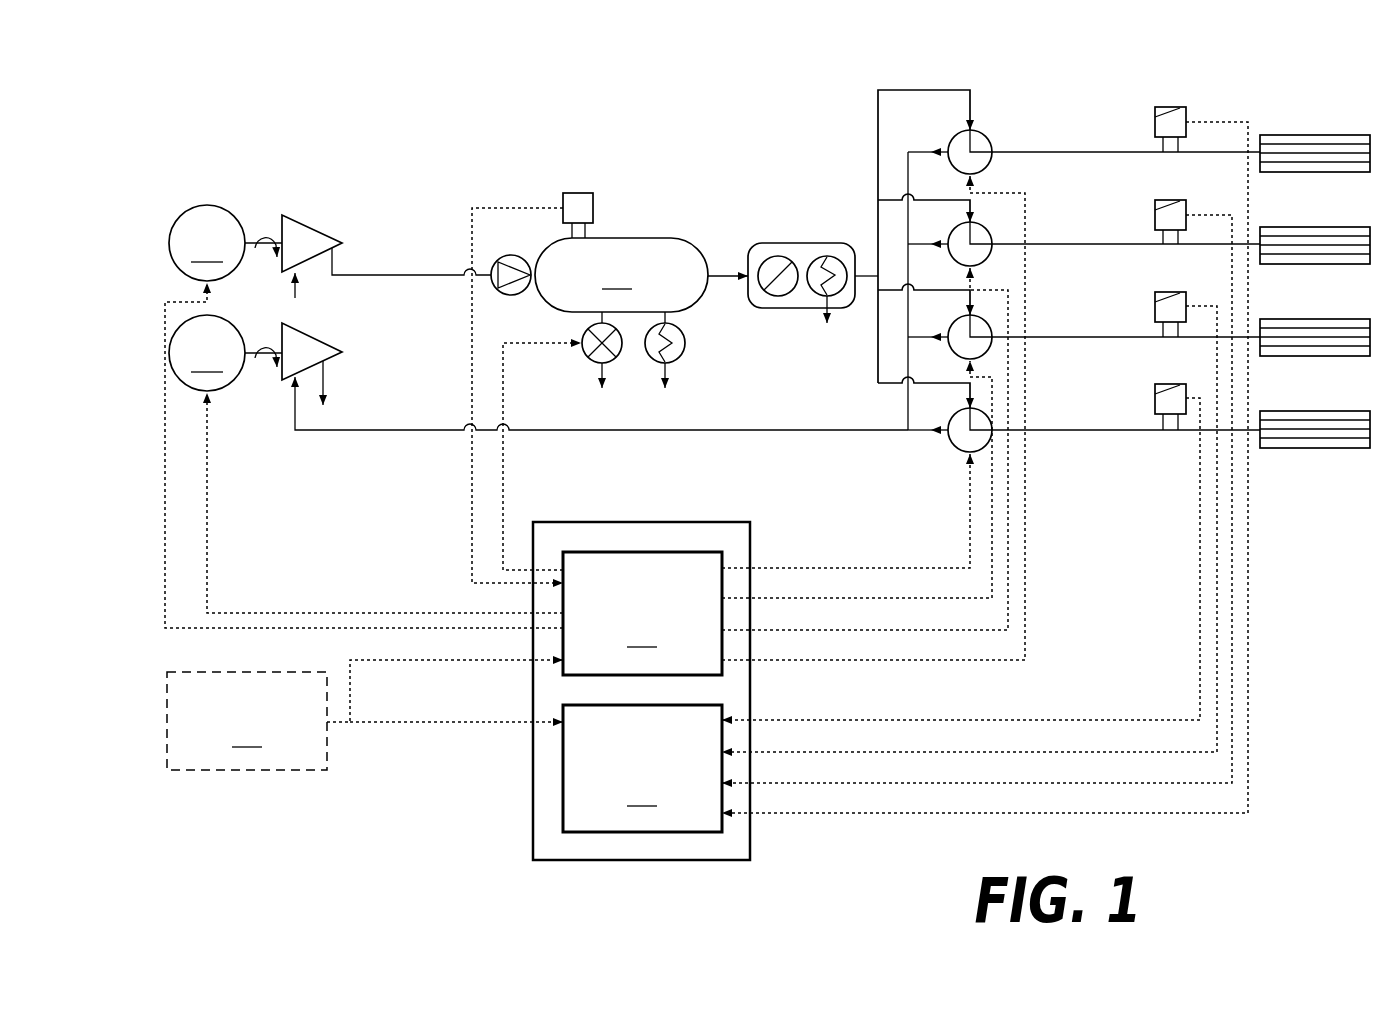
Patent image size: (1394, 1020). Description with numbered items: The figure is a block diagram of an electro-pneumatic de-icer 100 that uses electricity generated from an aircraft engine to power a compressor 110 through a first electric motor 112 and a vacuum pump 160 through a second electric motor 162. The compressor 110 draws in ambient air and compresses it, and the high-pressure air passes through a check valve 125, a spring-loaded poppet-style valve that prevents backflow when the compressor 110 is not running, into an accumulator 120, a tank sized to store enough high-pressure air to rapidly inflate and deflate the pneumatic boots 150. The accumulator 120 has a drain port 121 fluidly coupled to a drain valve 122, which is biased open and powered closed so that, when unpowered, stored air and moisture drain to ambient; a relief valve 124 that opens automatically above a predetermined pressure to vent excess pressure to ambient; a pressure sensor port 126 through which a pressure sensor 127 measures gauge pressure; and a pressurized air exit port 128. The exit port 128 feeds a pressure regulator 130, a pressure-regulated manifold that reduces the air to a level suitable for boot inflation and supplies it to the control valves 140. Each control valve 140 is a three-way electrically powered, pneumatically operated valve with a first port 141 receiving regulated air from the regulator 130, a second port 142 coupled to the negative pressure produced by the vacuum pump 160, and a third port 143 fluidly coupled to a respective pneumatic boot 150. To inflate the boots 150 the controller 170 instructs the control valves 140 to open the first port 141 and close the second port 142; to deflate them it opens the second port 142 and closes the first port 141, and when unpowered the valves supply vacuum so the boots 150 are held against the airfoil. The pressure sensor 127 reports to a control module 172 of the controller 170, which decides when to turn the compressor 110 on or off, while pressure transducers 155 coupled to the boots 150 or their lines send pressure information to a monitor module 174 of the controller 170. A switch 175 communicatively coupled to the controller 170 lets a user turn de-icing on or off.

The electro-pneumatic de-icer 100 is at (362, 50).
The compressor 110 is at (320, 233).
The first electric motor 112 is at (364, 416).
The accumulator 120 is at (621, 275).
The drain port 121 is at (597, 312).
The drain valve 122 is at (589, 352).
The relief valve 124 is at (684, 348).
The check valve 125 is at (492, 266).
The pressure sensor port 126 is at (572, 232).
The pressure sensor 127 is at (578, 196).
The pressurized air exit port 128 is at (717, 272).
The pressure regulator 130 is at (817, 243).
The control valves 140 is at (968, 72).
The first port 141 is at (973, 131).
The second port 142 is at (952, 144).
The third port 143 is at (993, 151).
The pneumatic boots 150 is at (1322, 128).
The pressure transducers 155 is at (1170, 88).
The vacuum pump 160 is at (283, 381).
The second electric motor 162 is at (366, 464).
The controller 170 is at (533, 813).
The control module 172 is at (642, 613).
The monitor module 174 is at (642, 768).
The switch 175 is at (365, 715).